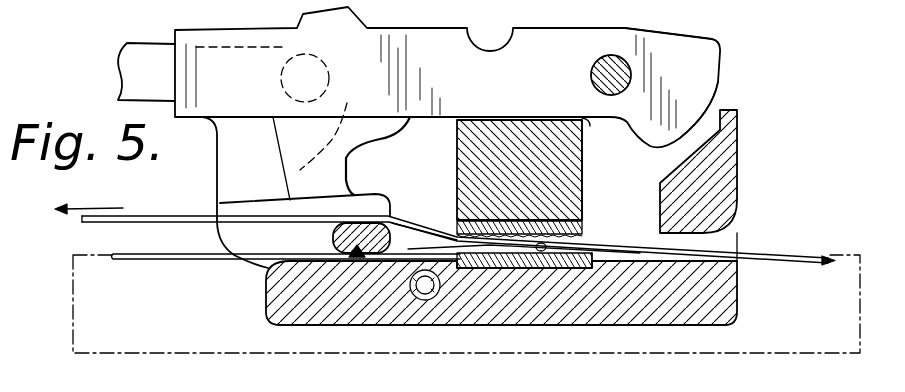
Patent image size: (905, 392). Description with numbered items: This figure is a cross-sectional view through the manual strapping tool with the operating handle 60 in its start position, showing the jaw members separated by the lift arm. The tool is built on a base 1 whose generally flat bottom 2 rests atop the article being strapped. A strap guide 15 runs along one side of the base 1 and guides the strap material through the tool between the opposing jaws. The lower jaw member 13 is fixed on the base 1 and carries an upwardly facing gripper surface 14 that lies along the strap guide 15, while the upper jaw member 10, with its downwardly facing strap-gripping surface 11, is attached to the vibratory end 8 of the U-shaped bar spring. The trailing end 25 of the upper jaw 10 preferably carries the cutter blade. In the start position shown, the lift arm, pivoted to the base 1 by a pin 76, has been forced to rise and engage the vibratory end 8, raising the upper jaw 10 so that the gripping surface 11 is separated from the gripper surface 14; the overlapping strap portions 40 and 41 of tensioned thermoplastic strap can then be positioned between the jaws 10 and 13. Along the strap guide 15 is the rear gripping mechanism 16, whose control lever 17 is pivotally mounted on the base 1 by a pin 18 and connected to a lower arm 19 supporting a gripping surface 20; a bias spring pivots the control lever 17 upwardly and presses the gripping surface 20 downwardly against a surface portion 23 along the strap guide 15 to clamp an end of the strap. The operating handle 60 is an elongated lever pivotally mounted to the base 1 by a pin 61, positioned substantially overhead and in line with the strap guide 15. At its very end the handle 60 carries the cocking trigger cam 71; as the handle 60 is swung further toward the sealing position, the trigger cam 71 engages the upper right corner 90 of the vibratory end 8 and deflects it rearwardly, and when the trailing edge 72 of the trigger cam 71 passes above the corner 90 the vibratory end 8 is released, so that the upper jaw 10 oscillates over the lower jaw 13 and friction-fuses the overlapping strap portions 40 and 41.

The base 1 is at (739, 299).
The bottom 2 is at (708, 322).
The vibratory end 8 is at (460, 137).
The upper jaw member 10 is at (588, 222).
The strap-gripping surface 11 is at (587, 230).
The lower jaw member 13 is at (588, 256).
The gripper surface 14 is at (543, 252).
The strap guide 15 is at (720, 233).
The rear gripping mechanism 16 is at (217, 147).
The control lever 17 is at (135, 43).
The pin 18 is at (282, 77).
The lower arm 19 is at (327, 195).
The gripping surface 20 is at (322, 189).
The surface portion 23 is at (332, 247).
The trailing end 25 is at (455, 224).
The overlapping strap portion 40 is at (140, 262).
The overlapping strap portion 41 is at (136, 215).
The operating handle 60 is at (415, 55).
The pin 61 is at (591, 73).
The cocking trigger cam 71 is at (718, 85).
The trailing edge 72 is at (718, 41).
The pin 76 is at (425, 300).
The upper right corner 90 is at (590, 120).